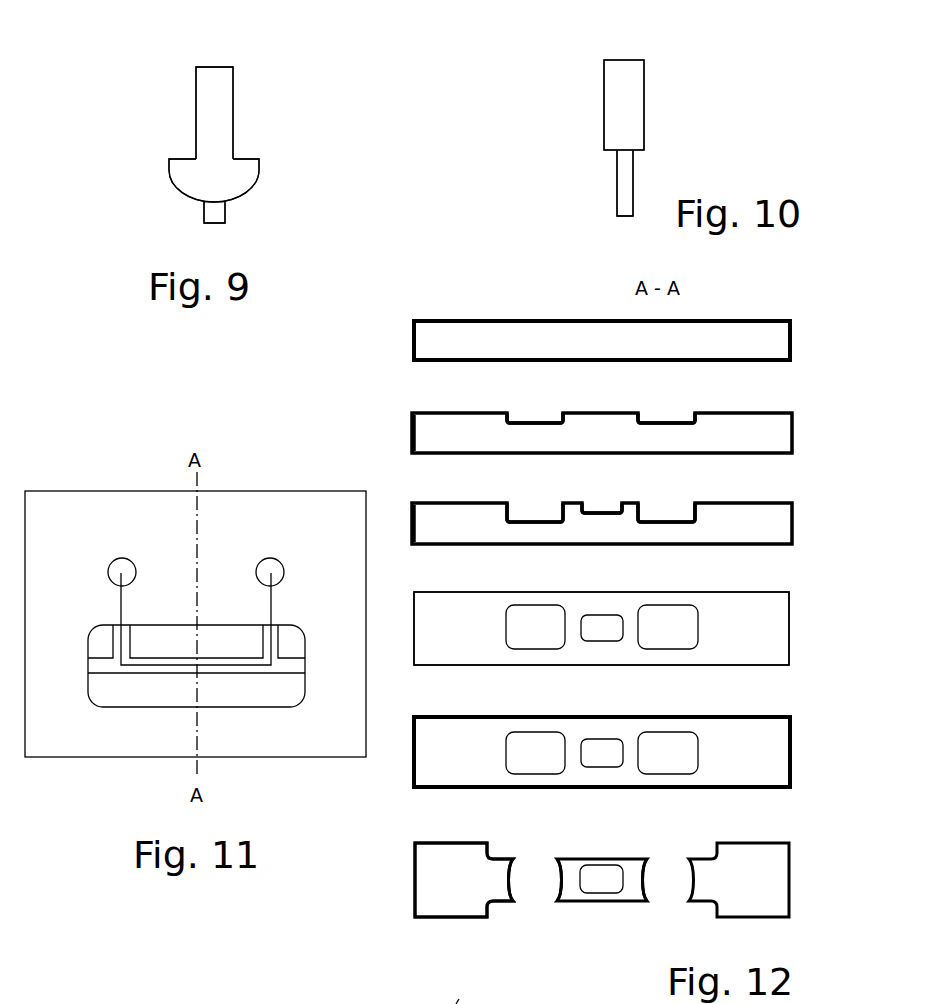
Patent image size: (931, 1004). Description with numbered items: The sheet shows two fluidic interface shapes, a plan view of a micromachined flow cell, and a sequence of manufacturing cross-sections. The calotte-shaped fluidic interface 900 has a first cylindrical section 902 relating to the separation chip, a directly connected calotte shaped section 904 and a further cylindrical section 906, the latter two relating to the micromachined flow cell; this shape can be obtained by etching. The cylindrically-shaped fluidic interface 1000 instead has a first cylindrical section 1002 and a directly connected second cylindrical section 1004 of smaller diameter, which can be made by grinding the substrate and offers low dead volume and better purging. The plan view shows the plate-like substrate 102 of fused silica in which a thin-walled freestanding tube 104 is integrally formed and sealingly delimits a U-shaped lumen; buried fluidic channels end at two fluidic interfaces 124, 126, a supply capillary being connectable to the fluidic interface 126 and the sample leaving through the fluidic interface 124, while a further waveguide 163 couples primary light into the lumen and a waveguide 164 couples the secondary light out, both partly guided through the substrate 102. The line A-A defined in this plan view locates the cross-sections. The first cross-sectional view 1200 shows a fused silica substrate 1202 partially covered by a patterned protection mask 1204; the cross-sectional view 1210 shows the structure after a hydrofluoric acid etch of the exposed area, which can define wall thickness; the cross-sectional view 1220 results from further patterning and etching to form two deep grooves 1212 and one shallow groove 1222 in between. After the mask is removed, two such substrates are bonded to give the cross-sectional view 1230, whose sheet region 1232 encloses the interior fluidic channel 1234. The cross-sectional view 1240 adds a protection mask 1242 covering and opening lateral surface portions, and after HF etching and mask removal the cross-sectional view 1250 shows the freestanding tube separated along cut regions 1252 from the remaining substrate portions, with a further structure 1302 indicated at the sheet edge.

In FIG. 9, the fluidic interface 900 is at (225, 54).
In FIG. 9, the first cylindrical section 902 is at (179, 66).
In FIG. 9, the calotte shaped section 904 is at (153, 160).
In FIG. 9, the further cylindrical section 906 is at (153, 202).
In FIG. 10, the fluidic interface 1000 is at (645, 46).
In FIG. 10, the first cylindrical section 1002 is at (593, 60).
In FIG. 10, the second cylindrical section 1004 is at (601, 152).
In FIG. 11, the plate-like substrate 102 is at (77, 517).
In FIG. 11, the freestanding tube 104 is at (180, 667).
In FIG. 11, the fluidic interface 124 is at (277, 562).
In FIG. 11, the fluidic interface 126 is at (118, 558).
In FIG. 11, the further waveguide 163 is at (100, 667).
In FIG. 11, the waveguide 164 is at (287, 667).
In FIG. 12, the first cross-sectional view 1200 is at (766, 310).
In FIG. 12, the fused silica substrate 1202 is at (530, 342).
In FIG. 12, the protection mask 1204 is at (447, 318).
In FIG. 12, the cross-sectional view 1210 is at (764, 401).
In FIG. 12, the deep grooves 1212 is at (665, 418).
In FIG. 12, the cross-sectional view 1220 is at (765, 493).
In FIG. 12, the shallow groove 1222 is at (625, 485).
In FIG. 12, the cross-sectional view 1230 is at (765, 583).
In FIG. 12, the sheet surface 1232 is at (445, 623).
In FIG. 12, the interior fluidic channel 1234 is at (598, 623).
In FIG. 12, the cross-sectional view 1240 is at (765, 707).
In FIG. 12, the protection mask 1242 is at (412, 760).
In FIG. 12, the cross-sectional view 1250 is at (765, 831).
In FIG. 12, the cut line 1252 is at (667, 883).
In FIG. 12, the component 1302 is at (461, 990).